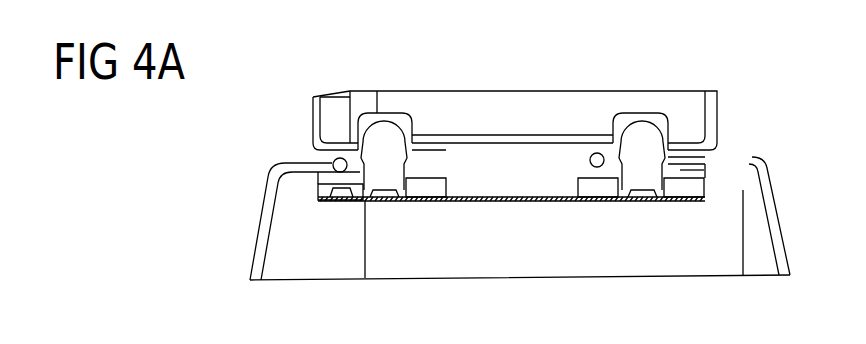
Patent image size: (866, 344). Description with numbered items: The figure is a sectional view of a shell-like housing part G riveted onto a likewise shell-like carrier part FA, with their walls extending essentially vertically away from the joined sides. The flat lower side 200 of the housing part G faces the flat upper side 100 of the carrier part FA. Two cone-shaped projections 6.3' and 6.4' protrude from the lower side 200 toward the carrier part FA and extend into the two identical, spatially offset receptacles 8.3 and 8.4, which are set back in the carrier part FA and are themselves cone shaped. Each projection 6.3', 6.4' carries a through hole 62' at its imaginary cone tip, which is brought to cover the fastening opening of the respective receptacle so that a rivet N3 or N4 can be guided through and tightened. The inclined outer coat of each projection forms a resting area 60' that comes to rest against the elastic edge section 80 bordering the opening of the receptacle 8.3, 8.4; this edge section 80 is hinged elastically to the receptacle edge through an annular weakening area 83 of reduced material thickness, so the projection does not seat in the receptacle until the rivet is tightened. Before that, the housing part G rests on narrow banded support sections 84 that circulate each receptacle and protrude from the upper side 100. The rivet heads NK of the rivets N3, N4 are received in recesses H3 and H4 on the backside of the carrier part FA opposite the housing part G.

The housing part G is at (345, 86).
The projection 6.3' is at (427, 92).
The projection 6.4' is at (678, 87).
The through hole 62' is at (466, 102).
The lower side 200 is at (573, 148).
The resting area 60' is at (603, 114).
The support section 84 is at (326, 163).
The weakening area 83 is at (338, 170).
The edge section 80 is at (357, 193).
The carrier part FA is at (255, 188).
The rivet N3 is at (340, 203).
The rivet head NK is at (414, 200).
The recess H3 is at (437, 190).
The receptacle 8.3 is at (447, 197).
The upper side 100 is at (533, 142).
The rivet N4 is at (658, 186).
The recess H4 is at (694, 190).
The receptacle 8.4 is at (690, 168).